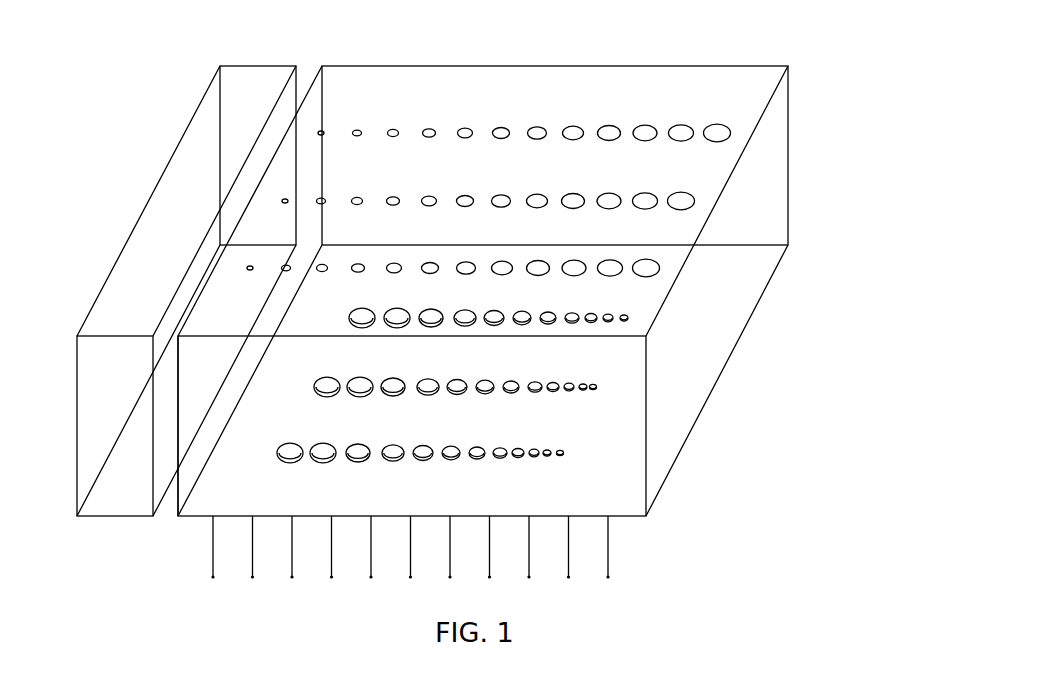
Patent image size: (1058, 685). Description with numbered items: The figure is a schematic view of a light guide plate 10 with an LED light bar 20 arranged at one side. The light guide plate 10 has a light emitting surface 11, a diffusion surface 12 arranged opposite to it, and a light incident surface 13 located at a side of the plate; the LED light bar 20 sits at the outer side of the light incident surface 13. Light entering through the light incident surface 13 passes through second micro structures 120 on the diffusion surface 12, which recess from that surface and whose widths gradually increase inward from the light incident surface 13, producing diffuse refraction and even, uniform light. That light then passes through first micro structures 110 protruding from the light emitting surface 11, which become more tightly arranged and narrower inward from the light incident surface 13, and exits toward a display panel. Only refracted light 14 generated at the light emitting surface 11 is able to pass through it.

The light guide plate 10 is at (565, 50).
The light emitting surface 11 is at (516, 426).
The first micro structures 110 is at (563, 455).
The diffusion surface 12 is at (608, 155).
The second micro structures 120 is at (728, 138).
The light incident surface 13 is at (178, 407).
The refracted light 14 is at (606, 560).
The LED light bar 20 is at (203, 100).